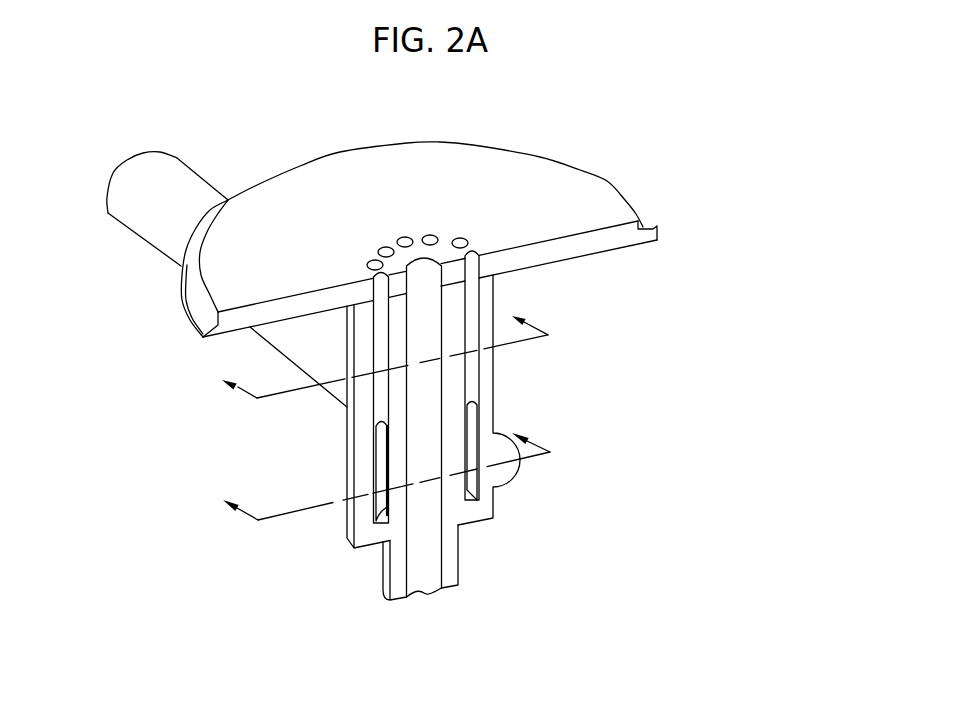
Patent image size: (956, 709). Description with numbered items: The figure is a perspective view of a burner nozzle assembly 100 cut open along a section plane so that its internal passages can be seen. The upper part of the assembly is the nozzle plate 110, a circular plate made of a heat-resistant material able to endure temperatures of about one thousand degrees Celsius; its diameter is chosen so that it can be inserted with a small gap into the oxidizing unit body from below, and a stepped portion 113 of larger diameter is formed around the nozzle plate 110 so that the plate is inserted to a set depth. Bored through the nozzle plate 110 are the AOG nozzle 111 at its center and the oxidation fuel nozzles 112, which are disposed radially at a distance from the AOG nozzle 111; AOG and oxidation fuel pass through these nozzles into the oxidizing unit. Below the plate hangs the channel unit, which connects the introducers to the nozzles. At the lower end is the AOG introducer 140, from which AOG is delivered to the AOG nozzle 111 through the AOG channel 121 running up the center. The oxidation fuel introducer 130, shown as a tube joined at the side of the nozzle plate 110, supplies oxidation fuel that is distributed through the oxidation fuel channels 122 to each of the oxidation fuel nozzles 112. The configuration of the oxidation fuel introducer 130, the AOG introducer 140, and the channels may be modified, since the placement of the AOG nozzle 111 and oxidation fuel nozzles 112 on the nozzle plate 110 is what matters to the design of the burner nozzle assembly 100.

The burner nozzle assembly 100 is at (268, 148).
The nozzle plate 110 is at (595, 190).
The AOG nozzle 111 is at (421, 270).
The oxidation fuel nozzles 112 is at (405, 236).
The stepped portion 113 is at (645, 228).
The AOG channel 121 is at (421, 517).
The oxidation fuel channel 122 is at (386, 445).
The oxidation fuel introducer 130 is at (146, 208).
The AOG introducer 140 is at (447, 568).